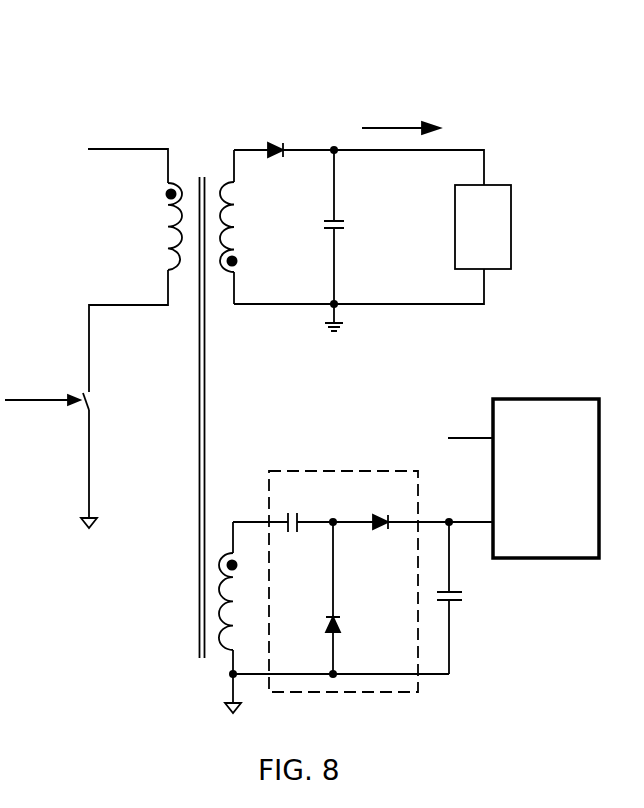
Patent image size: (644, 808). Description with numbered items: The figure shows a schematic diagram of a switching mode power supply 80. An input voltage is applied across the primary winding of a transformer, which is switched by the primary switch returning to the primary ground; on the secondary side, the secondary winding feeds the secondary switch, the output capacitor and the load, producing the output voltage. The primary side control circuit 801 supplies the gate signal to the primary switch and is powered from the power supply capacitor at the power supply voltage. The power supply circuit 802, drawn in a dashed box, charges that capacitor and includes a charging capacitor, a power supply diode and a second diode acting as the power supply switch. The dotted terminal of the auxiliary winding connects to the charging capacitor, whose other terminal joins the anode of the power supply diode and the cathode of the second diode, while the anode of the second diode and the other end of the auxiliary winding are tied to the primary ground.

The switching mode power supply 80 is at (548, 63).
The primary side control circuit 801 is at (546, 478).
The power supply circuit 802 is at (311, 471).